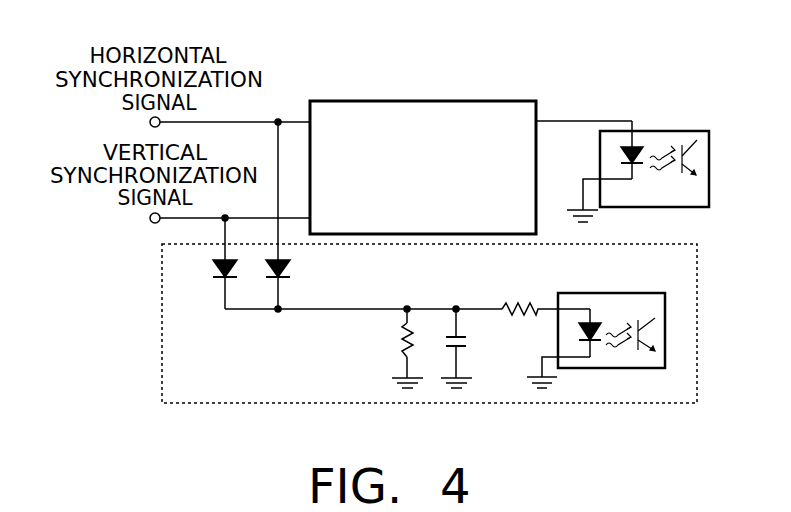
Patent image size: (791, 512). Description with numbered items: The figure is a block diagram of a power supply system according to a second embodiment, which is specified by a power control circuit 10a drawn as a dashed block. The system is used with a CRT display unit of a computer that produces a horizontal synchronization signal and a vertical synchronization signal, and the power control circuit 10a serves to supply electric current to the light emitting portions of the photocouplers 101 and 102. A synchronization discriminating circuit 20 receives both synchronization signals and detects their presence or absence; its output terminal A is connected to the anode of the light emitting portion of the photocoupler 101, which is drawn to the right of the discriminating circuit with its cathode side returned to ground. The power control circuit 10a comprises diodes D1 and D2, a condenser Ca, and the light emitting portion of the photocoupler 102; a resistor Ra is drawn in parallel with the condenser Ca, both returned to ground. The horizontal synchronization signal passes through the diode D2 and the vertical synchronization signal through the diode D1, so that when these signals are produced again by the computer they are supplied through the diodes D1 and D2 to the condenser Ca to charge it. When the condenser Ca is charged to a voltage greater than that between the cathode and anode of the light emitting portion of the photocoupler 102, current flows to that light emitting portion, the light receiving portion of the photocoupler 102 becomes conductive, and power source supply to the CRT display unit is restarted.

The synchronization discriminating circuit 20 is at (406, 99).
The photocoupler 101 is at (658, 130).
The photocoupler 102 is at (602, 292).
The power control circuit 10a is at (447, 405).
The output terminal A is at (584, 107).
The diode D1 is at (208, 266).
The diode D2 is at (296, 266).
The resistor Ra is at (393, 348).
The condenser Ca is at (471, 348).